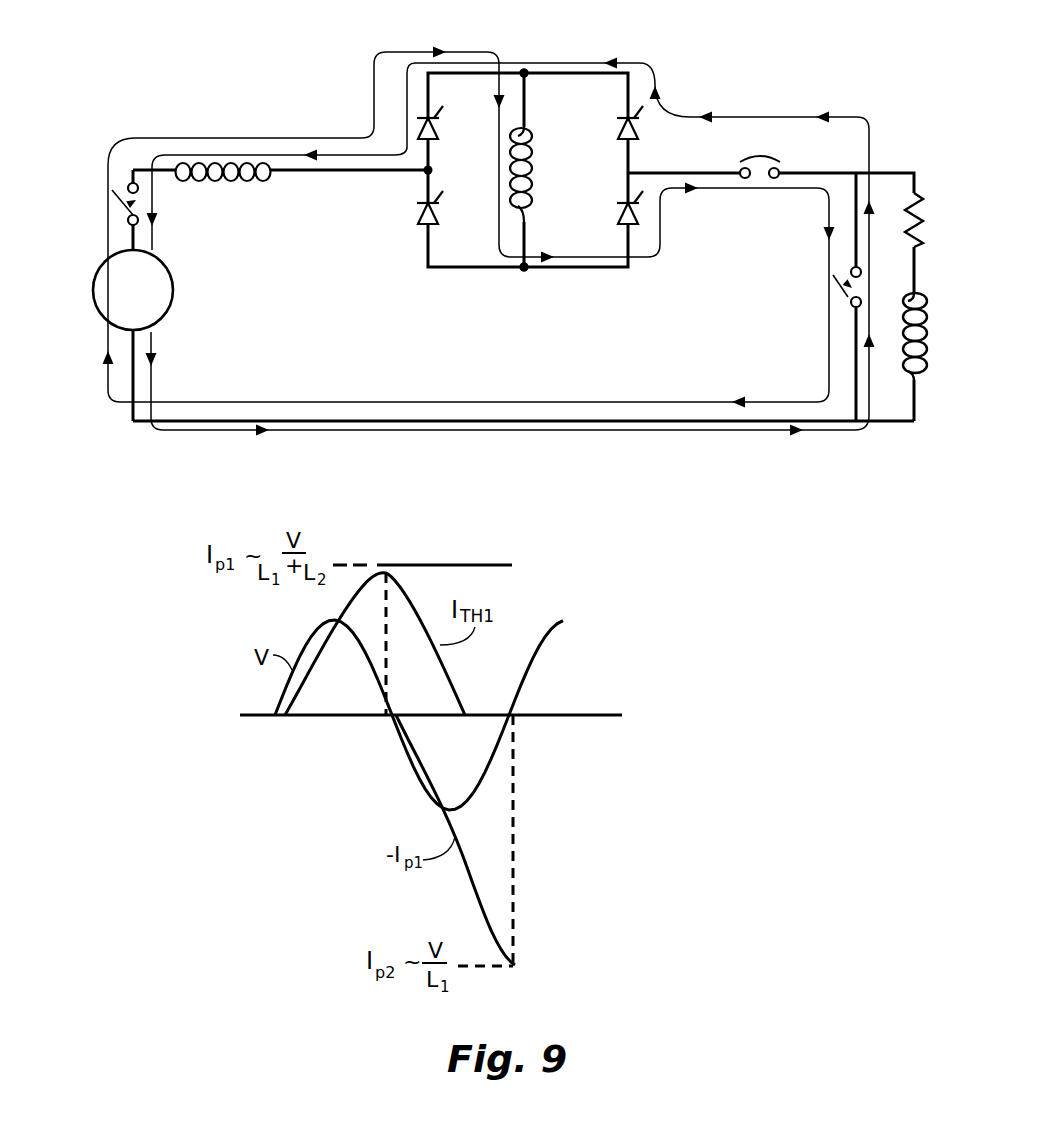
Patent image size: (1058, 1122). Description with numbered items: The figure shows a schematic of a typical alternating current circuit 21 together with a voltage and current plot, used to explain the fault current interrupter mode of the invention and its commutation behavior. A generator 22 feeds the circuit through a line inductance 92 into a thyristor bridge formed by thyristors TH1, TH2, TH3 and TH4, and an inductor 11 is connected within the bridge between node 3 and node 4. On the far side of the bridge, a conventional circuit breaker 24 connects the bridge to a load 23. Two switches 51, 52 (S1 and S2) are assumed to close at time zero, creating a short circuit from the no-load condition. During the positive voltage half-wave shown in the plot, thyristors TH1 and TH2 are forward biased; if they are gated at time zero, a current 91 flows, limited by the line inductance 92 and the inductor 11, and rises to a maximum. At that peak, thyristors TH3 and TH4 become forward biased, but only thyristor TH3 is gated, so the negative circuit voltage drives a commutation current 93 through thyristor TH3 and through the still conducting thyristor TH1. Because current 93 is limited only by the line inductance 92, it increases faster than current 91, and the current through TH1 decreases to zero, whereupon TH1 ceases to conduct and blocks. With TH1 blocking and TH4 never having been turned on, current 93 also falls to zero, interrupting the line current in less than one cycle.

The node 3 is at (524, 68).
The node 4 is at (524, 273).
The inductor 11 is at (533, 192).
The generator to load circuit 21 is at (288, 418).
The generator 22 is at (95, 313).
The load 23 is at (915, 250).
The circuit breaker 24 is at (762, 148).
The switch S1 51 is at (110, 186).
The switch S2 52 is at (840, 288).
The current 91 is at (157, 134).
The line inductance 92 is at (173, 162).
The commutation current 93 is at (678, 110).
The thyristor TH1 is at (417, 130).
The thyristor TH2 is at (620, 228).
The thyristor TH3 is at (616, 133).
The thyristor TH4 is at (416, 210).